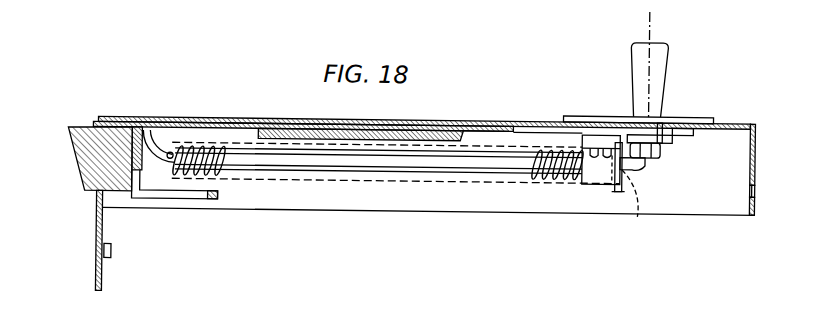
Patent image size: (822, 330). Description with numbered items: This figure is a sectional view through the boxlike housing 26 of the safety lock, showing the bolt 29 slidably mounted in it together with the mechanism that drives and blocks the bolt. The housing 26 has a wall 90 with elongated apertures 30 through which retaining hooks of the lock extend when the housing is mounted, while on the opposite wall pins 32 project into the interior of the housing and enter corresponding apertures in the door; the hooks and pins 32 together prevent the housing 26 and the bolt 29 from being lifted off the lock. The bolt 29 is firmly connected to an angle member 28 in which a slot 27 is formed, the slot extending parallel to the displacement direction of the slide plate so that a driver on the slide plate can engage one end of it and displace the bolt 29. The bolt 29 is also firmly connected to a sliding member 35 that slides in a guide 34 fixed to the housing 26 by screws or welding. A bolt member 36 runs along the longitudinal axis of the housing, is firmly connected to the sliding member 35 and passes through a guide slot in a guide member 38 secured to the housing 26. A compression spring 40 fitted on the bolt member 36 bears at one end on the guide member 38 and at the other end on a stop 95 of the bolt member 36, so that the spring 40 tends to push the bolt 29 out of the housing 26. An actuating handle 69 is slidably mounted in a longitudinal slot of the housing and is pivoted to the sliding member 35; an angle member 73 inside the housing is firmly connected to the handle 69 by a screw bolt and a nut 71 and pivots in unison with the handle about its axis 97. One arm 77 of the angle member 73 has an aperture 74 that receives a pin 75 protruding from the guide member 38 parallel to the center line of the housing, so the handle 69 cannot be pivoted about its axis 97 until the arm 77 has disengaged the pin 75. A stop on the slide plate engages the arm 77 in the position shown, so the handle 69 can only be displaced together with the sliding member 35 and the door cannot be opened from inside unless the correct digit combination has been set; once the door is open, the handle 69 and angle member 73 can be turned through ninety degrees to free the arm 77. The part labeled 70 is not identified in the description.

The housing 26 is at (233, 117).
The slot 27 is at (192, 197).
The angle member 28 is at (136, 137).
The bolt 29 is at (83, 159).
The elongated apertures 30 is at (757, 183).
The pins 32 is at (112, 248).
The guide 34 is at (403, 136).
The sliding member 35 is at (495, 121).
The bolt member 36 is at (322, 164).
The guide member 38 is at (593, 165).
The compression spring 40 is at (219, 156).
The actuating handle 69 is at (661, 51).
The guide bar 70 is at (565, 111).
The nut 71 is at (662, 147).
The angle member 73 is at (667, 124).
The aperture 74 is at (638, 211).
The pin 75 is at (640, 162).
The arm 77 is at (622, 155).
The wall 90 is at (757, 146).
The stop 95 is at (172, 150).
The axis 97 is at (647, 24).